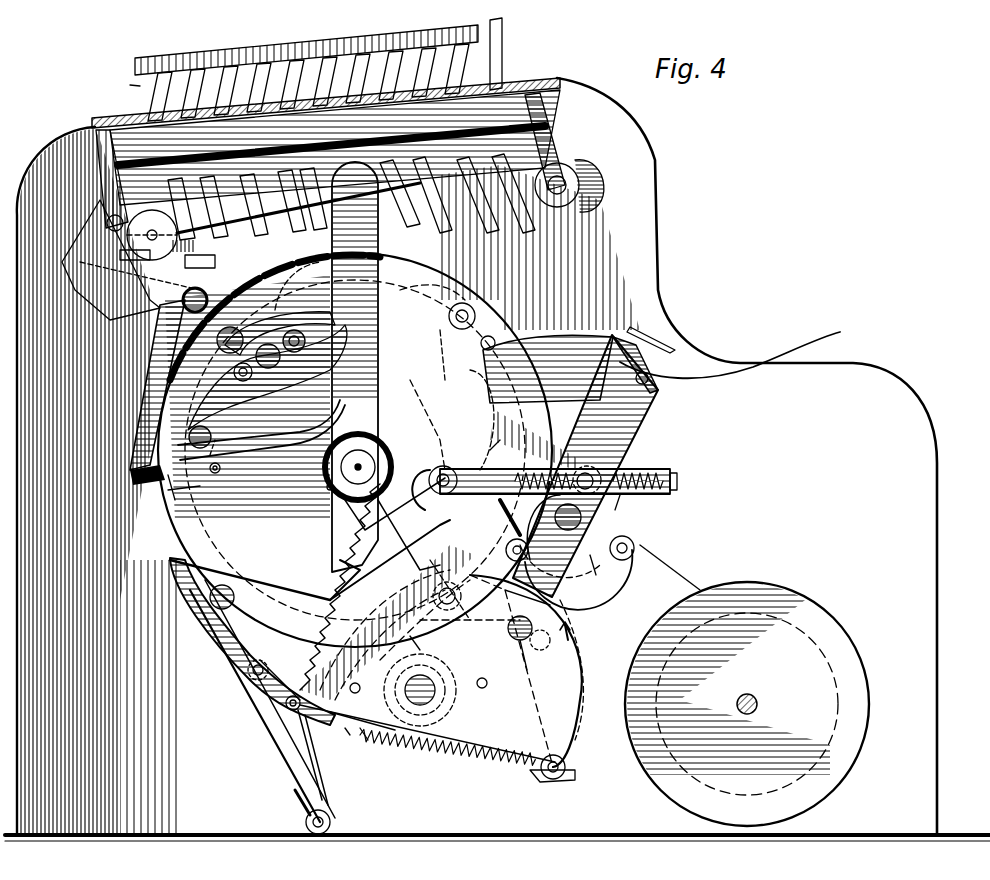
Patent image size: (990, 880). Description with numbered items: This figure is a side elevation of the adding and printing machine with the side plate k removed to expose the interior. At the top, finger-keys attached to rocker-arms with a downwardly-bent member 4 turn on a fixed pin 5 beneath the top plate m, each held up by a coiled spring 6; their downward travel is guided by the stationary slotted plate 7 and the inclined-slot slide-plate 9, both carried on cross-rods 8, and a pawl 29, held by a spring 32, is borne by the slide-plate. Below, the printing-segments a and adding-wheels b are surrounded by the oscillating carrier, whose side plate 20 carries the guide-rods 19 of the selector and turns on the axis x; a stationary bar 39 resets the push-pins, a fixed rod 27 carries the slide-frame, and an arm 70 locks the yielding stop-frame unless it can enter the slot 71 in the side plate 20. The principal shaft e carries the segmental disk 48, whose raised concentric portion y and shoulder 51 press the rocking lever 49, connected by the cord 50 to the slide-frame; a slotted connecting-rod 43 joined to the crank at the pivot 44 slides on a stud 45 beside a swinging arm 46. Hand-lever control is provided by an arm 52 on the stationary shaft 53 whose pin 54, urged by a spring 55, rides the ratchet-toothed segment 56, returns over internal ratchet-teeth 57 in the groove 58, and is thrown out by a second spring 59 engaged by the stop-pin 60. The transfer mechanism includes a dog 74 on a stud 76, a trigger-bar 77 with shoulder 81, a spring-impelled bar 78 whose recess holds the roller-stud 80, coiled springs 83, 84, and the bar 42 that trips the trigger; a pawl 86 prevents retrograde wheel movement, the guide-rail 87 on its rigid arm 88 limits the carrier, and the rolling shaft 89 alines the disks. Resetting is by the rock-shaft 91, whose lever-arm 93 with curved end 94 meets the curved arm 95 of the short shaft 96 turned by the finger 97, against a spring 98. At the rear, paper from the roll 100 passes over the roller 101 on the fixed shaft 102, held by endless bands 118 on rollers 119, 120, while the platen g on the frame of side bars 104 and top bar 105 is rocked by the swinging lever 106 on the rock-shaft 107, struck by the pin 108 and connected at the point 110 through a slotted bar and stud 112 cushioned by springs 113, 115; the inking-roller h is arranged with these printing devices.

The downwardly-bent member 4 is at (440, 228).
The fixed pin 5 is at (127, 85).
The coiled spring 6 is at (404, 240).
The stationary slotted plate 7 is at (504, 89).
The stationary cross-rods 8 is at (150, 208).
The slide-plate with inclined slots 9 is at (560, 120).
The guide-rods 19 is at (497, 306).
The side plate of oscillating carrier 20 is at (355, 450).
The fixed rod 27 is at (221, 269).
The pawl 29 is at (150, 290).
The spring 32 is at (176, 267).
The stationary bar 39 is at (252, 380).
The bar 42 is at (226, 590).
The slotted connecting-rod 43 is at (510, 517).
The pivot 44 is at (529, 649).
The stud 45 is at (395, 524).
The swinging arm 46 is at (446, 604).
The segmental disk 48 is at (580, 705).
The rocking lever 49 is at (340, 458).
The cord 50 is at (229, 283).
The shoulder 51 is at (540, 598).
The arm 52 is at (300, 770).
The stationary shaft 53 is at (332, 822).
The pin 54 is at (260, 705).
The spring 55 is at (305, 800).
The ratchet-toothed segment 56 is at (320, 590).
The internal ratchet-teeth 57 is at (385, 635).
The groove 58 is at (362, 686).
The second spring 59 is at (330, 772).
The stop-pin 60 is at (372, 690).
The arm 70 is at (157, 385).
The open slot 71 is at (184, 494).
The dog 74 is at (443, 607).
The stud 76 is at (415, 635).
The trigger-bar 77 is at (565, 758).
The spring-impelled bar 78 is at (265, 755).
The roller-stud 80 is at (235, 702).
The shoulder 81 is at (474, 687).
The coiled spring 83 is at (452, 758).
The coiled spring 84 is at (430, 762).
The spring-held pawl 86 is at (400, 740).
The curved guide-rail 87 is at (269, 670).
The rigid arm 88 is at (415, 550).
The rolling shaft 89 is at (228, 377).
The rock-shaft 91 is at (160, 462).
The lever-arm 93 is at (260, 450).
The curved outer end 94 is at (316, 377).
The short curved arm 95 is at (355, 367).
The short shaft 96 is at (300, 318).
The lever or finger 97 is at (330, 248).
The spring 98 is at (210, 470).
The paper roll 100 is at (780, 608).
The paper-feeding roller 101 is at (616, 528).
The fixed shaft 102 is at (566, 525).
The side bars 104 is at (626, 437).
The top bar 105 is at (658, 388).
The swinging lever 106 is at (425, 425).
The cross-rod 107 is at (432, 298).
The pin 108 is at (677, 490).
The attachment point 110 is at (436, 470).
The stud 112 is at (630, 460).
The spring 113 is at (631, 505).
The coiled spring 115 is at (573, 470).
The endless bands 118 is at (596, 569).
The roller 119 is at (624, 560).
The roller 120 is at (511, 544).
The printing-segments a is at (137, 62).
The top plate m is at (548, 80).
The paper-platen g is at (627, 332).
The inking-roller h is at (491, 335).
The adding-wheels b is at (525, 420).
The principal shaft e is at (420, 690).
The axis x is at (318, 489).
The raised concentric portion y is at (570, 678).
The side plate k is at (497, 459).